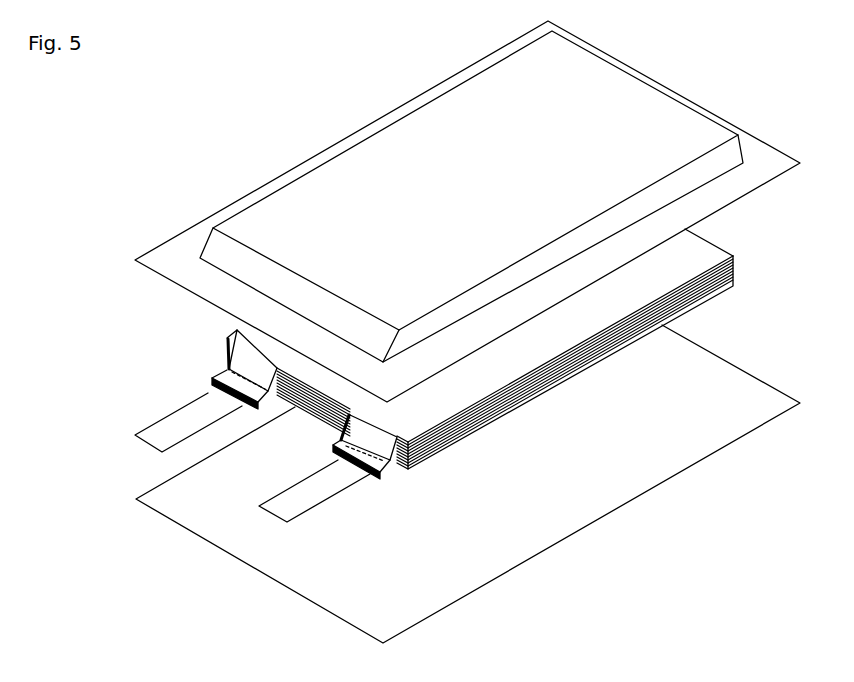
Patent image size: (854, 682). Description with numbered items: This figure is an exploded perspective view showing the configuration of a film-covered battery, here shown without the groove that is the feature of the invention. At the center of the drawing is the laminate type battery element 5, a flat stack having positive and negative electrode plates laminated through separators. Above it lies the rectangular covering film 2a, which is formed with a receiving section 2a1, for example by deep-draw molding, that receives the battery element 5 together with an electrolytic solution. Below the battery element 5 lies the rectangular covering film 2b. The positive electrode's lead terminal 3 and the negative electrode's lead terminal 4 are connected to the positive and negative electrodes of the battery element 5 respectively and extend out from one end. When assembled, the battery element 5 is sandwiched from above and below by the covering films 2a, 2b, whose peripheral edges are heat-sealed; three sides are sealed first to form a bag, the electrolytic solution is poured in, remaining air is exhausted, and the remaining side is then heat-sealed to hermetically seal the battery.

The covering film 2a is at (662, 116).
The receiving section 2a1 is at (218, 247).
The covering film 2b is at (571, 507).
The battery element 5 is at (675, 257).
The positive electrode's lead terminal 3 is at (283, 507).
The negative electrode's lead terminal 4 is at (157, 437).